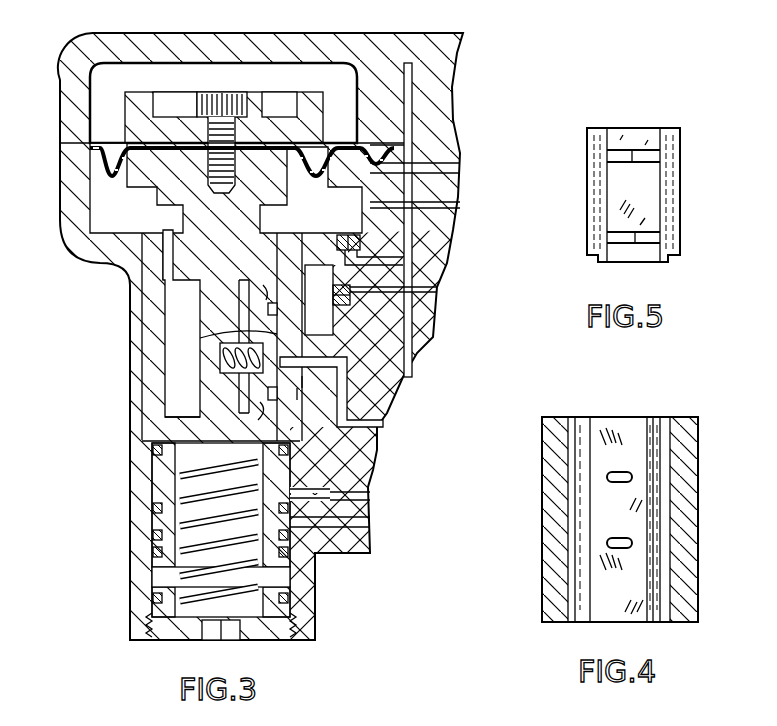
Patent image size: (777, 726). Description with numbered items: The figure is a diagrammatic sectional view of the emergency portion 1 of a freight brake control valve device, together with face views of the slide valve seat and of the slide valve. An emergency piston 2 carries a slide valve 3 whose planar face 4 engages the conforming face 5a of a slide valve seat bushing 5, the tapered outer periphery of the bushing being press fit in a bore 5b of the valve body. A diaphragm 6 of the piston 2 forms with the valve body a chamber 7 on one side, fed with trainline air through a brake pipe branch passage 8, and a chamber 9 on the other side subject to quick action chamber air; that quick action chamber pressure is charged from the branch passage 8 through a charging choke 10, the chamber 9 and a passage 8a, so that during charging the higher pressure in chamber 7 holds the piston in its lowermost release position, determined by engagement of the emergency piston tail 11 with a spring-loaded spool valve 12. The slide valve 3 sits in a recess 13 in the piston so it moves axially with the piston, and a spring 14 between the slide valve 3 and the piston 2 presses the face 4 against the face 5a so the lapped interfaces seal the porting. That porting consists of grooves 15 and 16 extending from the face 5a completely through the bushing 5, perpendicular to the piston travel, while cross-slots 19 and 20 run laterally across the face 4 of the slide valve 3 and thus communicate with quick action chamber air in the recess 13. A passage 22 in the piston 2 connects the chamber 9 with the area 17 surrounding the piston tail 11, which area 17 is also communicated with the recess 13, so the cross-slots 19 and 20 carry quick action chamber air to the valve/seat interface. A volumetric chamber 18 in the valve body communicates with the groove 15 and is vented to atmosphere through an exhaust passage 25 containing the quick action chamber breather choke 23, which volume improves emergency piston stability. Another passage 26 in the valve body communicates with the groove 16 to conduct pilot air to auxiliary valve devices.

In FIG. 3, the emergency portion 1 is at (74, 46).
In FIG. 3, the emergency piston 2 is at (115, 190).
In FIG. 3, the slide valve 3 is at (250, 317).
In FIG. 5, the slide valve 3 is at (668, 150).
In FIG. 3, the planar face 4 is at (200, 340).
In FIG. 5, the planar face 4 is at (645, 200).
In FIG. 3, the slide valve seat bushing 5 is at (312, 352).
In FIG. 4, the slide valve seat bushing 5 is at (690, 462).
In FIG. 3, the conforming face 5a is at (297, 392).
In FIG. 4, the conforming face 5a is at (640, 517).
In FIG. 3, the bore 5b is at (322, 338).
In FIG. 3, the diaphragm 6 is at (100, 160).
In FIG. 3, the chamber 7 is at (105, 97).
In FIG. 3, the brake pipe branch passage 8 is at (414, 86).
In FIG. 3, the passage 8a is at (452, 208).
In FIG. 3, the chamber 9 is at (107, 218).
In FIG. 3, the charging choke 10 is at (340, 236).
In FIG. 3, the emergency piston tail 11 is at (218, 413).
In FIG. 3, the spring-loaded spool valve 12 is at (180, 460).
In FIG. 3, the recess 13 is at (243, 292).
In FIG. 3, the spring 14 is at (220, 366).
In FIG. 3, the groove 15 is at (283, 240).
In FIG. 4, the groove 15 is at (615, 476).
In FIG. 3, the groove 16 is at (339, 385).
In FIG. 4, the groove 16 is at (615, 543).
In FIG. 3, the area 17 is at (175, 322).
In FIG. 3, the volumetric chamber 18 is at (322, 313).
In FIG. 3, the cross-slot 19 is at (264, 285).
In FIG. 5, the cross-slot 19 is at (632, 158).
In FIG. 3, the cross-slot 20 is at (259, 420).
In FIG. 5, the cross-slot 20 is at (635, 243).
In FIG. 3, the passage 22 is at (150, 270).
In FIG. 3, the breather choke 23 is at (342, 304).
In FIG. 3, the exhaust passage 25 is at (437, 292).
In FIG. 3, the passage 26 is at (382, 428).